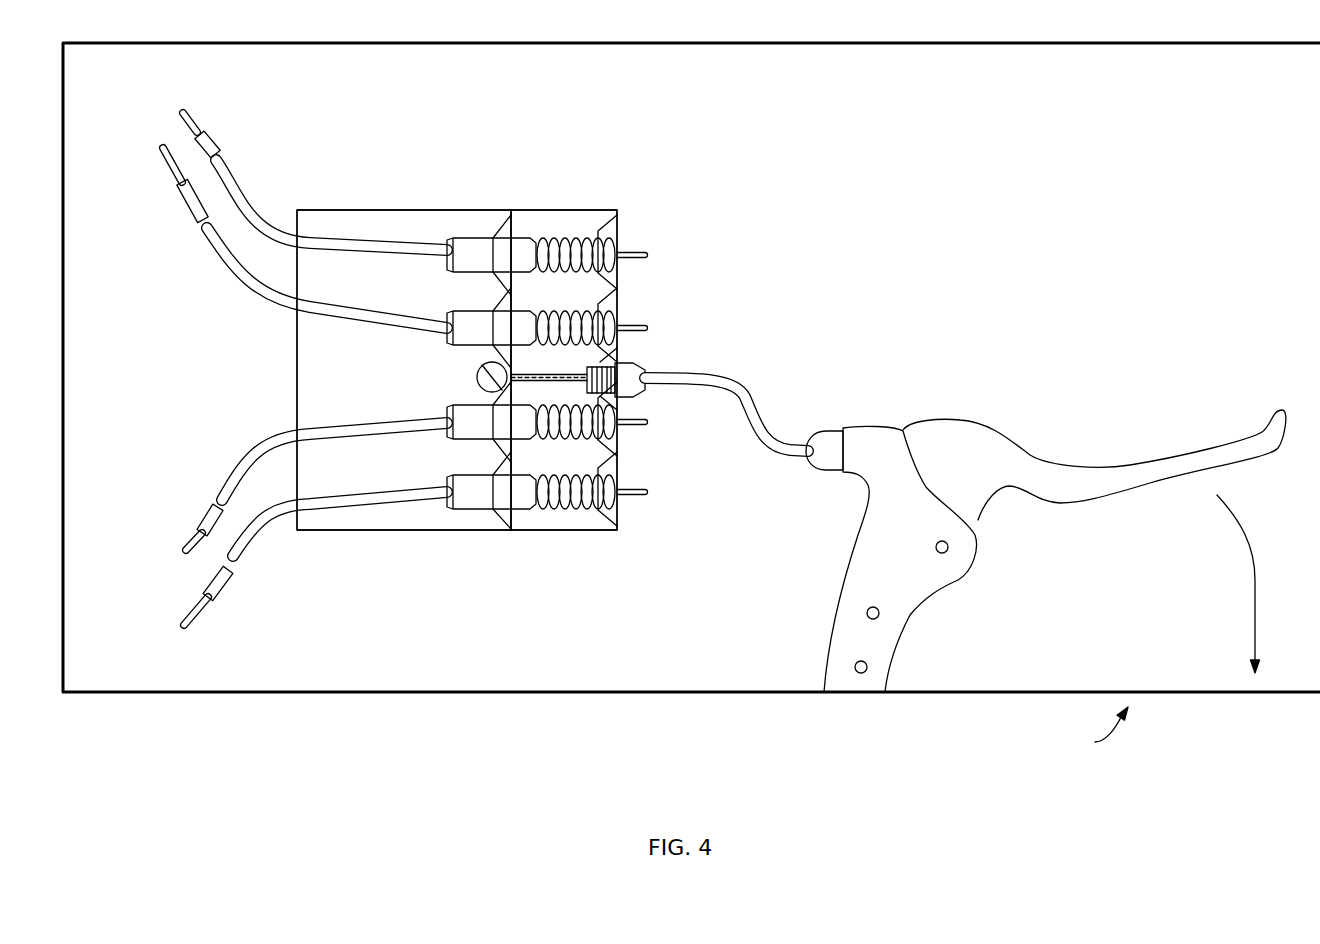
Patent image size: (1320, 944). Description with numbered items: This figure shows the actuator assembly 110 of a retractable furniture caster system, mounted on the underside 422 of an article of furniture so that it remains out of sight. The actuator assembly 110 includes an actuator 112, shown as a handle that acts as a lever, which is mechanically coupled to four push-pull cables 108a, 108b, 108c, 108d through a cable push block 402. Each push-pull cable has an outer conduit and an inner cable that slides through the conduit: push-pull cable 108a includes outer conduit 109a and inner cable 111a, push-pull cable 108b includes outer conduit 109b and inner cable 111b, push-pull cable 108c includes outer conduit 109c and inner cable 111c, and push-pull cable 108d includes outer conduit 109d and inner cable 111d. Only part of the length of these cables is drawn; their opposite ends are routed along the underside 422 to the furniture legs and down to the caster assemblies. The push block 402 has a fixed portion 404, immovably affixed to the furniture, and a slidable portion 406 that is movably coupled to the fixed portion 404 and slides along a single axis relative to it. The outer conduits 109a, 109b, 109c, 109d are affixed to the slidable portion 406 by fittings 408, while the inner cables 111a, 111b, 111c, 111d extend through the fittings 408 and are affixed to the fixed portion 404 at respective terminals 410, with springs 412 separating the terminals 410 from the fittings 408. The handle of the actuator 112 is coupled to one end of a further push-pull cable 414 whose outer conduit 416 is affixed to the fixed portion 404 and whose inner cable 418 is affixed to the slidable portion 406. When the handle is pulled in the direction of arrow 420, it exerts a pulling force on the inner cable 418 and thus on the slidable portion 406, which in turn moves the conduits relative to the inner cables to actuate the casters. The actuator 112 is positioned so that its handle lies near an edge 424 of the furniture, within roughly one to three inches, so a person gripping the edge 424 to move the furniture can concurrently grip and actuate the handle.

The actuator assembly 110 is at (778, 108).
The actuator 112 is at (927, 422).
The push-pull cable 108a is at (315, 184).
The push-pull cable 108b is at (268, 255).
The push-pull cable 108c is at (280, 463).
The push-pull cable 108d is at (281, 536).
The outer conduit 109a is at (313, 255).
The outer conduit 109b is at (313, 325).
The outer conduit 109c is at (325, 422).
The outer conduit 109d is at (322, 488).
The inner cable 111a is at (185, 112).
The inner cable 111b is at (165, 150).
The inner cable 111c is at (187, 548).
The inner cable 111d is at (187, 622).
The cable push block 402 is at (490, 152).
The fixed portion 404 is at (560, 532).
The slidable portion 406 is at (400, 532).
The fittings 408 is at (480, 237).
The terminals 410 is at (632, 262).
The springs 412 is at (577, 240).
The push-pull cable 414 is at (730, 356).
The outer conduit 416 is at (780, 453).
The inner cable 418 is at (575, 374).
The arrow 420 is at (1255, 566).
The underside 422 is at (1058, 283).
The edge 424 is at (1087, 728).